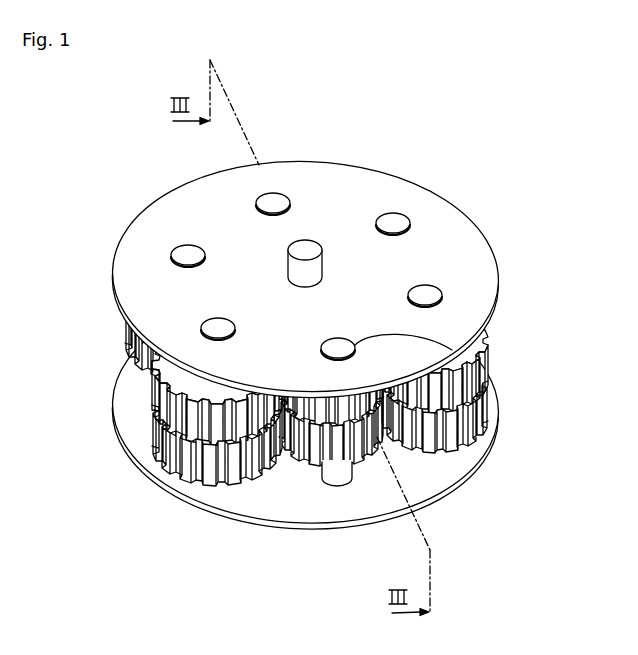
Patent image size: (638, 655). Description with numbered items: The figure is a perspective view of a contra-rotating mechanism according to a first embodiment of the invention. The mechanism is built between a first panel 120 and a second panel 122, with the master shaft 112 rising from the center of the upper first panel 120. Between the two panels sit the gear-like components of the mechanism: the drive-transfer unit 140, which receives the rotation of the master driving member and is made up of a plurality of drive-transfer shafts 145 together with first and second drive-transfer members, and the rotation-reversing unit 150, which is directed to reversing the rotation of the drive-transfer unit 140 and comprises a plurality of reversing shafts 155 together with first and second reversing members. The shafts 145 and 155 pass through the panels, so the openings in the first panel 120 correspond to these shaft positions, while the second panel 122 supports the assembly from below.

The master shaft 112 is at (308, 247).
The first panel 120 is at (363, 180).
The second panel 122 is at (229, 502).
The drive-transfer unit 140 is at (306, 474).
The drive-transfer shaft 145 is at (483, 360).
The rotation-reversing unit 150 is at (143, 407).
The reversing shaft 155 is at (443, 294).